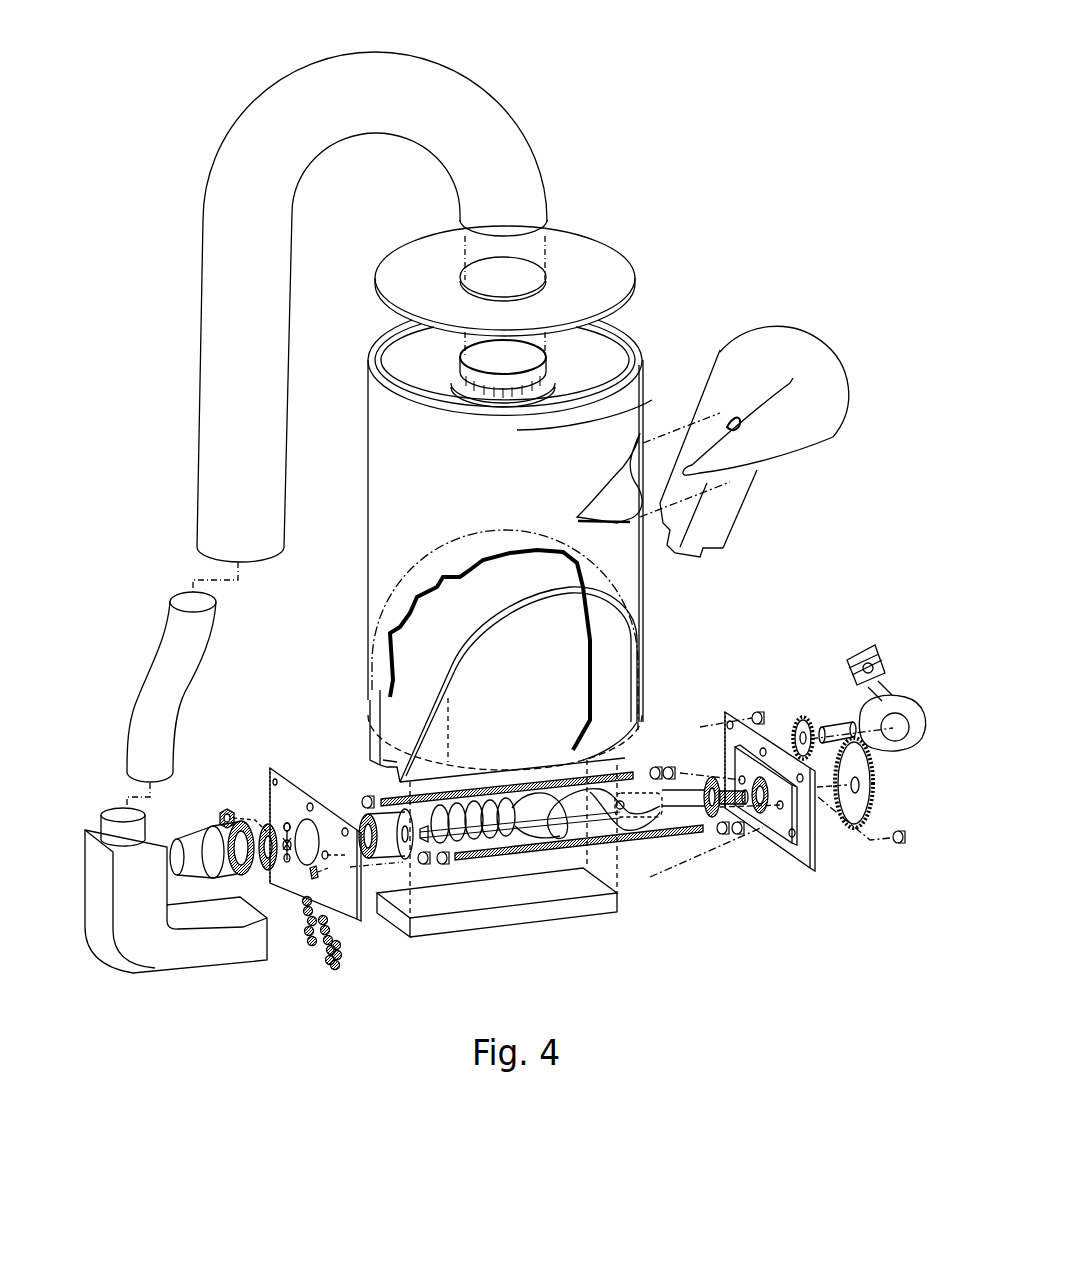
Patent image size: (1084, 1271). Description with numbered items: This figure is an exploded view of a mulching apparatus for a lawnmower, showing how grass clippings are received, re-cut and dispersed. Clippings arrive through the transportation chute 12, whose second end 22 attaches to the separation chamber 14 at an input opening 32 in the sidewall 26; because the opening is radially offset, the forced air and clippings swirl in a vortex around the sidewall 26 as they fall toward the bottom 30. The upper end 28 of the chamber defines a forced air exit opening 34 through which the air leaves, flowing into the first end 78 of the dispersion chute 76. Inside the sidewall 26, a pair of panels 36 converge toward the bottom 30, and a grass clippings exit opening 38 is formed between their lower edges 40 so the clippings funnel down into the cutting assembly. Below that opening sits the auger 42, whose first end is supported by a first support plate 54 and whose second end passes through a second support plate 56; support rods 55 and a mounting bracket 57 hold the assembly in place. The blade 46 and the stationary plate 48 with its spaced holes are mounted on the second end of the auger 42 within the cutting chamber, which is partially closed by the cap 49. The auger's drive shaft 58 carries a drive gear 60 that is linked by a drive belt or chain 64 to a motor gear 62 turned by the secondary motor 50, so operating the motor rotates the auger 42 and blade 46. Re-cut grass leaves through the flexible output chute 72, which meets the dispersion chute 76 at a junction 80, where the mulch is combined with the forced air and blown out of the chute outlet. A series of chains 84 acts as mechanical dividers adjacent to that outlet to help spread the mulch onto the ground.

The transportation chute 12 is at (787, 340).
The separation chamber 14 is at (625, 428).
The second end 22 is at (797, 423).
The sidewall 26 is at (630, 447).
The upper end 28 is at (585, 298).
The bottom 30 is at (608, 745).
The input opening 32 is at (603, 510).
The forced air exit opening 34 is at (492, 280).
The panels 36 is at (380, 673).
The grass clippings exit opening 38 is at (392, 775).
The lower edges 40 is at (397, 760).
The auger 42 is at (530, 818).
The blade 46 is at (288, 857).
The stationary plate 48 is at (272, 863).
The cap 49 is at (250, 843).
The secondary motor 50 is at (880, 715).
The first support plate 54 is at (800, 837).
The support rods 55 is at (495, 855).
The second support plate 56 is at (338, 878).
The mounting bracket 57 is at (448, 922).
The drive shaft 58 is at (693, 803).
The drive gear 60 is at (857, 805).
The motor gear 62 is at (798, 735).
The drive belt or chain 64 is at (820, 720).
The output chute 72 is at (197, 843).
The dispersion chute 76 is at (220, 273).
The first end 78 is at (537, 223).
The junction 80 is at (167, 868).
The chains 84 is at (327, 962).